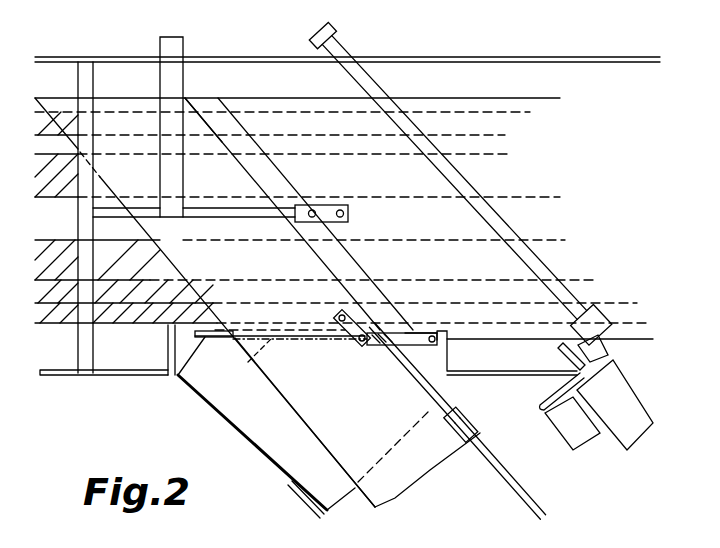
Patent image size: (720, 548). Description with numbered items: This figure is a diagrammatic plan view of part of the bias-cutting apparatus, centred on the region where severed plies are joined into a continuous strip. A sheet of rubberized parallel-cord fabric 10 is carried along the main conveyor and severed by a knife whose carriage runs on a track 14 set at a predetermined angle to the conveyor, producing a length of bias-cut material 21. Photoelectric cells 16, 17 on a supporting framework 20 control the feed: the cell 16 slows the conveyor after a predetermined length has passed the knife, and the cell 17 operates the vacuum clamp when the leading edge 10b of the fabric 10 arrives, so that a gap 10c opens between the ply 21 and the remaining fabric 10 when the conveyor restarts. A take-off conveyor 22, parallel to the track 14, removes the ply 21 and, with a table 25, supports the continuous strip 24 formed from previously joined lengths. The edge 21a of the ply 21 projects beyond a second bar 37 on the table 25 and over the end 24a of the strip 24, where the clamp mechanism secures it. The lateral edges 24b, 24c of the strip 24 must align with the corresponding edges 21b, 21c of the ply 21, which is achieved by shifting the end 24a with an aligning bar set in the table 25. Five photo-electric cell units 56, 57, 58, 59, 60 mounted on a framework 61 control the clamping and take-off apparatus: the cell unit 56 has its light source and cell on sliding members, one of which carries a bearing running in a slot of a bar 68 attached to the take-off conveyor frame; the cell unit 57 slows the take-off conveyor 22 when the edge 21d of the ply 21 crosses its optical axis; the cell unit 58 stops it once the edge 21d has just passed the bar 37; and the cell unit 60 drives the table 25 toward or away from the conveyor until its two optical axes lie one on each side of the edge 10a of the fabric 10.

The sheet of rubberized parallel-cord fabric 10 is at (288, 143).
The edge of the fabric 10a is at (480, 337).
The leading edge of the fabric 10b is at (287, 180).
The gap 10c is at (222, 135).
The track 14 is at (478, 177).
The photoelectric cell 16 is at (350, 210).
The photoelectric cell 17 is at (290, 240).
The supporting framework 20 is at (167, 94).
The length of bias-cut material 21 is at (203, 267).
The edge of the ply 21a is at (283, 336).
The lateral edge of the ply 21b is at (182, 245).
The lateral edge of the ply 21c is at (340, 313).
The edge of the ply 21d is at (127, 98).
The take-off conveyor 22 is at (497, 457).
The continuous strip 24 is at (317, 430).
The end of the strip 24a is at (209, 359).
The lateral edge of the strip 24b is at (328, 453).
The lateral edge of the strip 24c is at (440, 377).
The table 25 is at (227, 414).
The second bar 37 is at (175, 378).
The photo-electric cell unit 56 is at (382, 320).
The photo-electric cell unit 57 is at (342, 320).
The photo-electric cell unit 58 is at (360, 341).
The photo-electric cell unit 59 is at (384, 346).
The photo-electric cell unit 60 is at (434, 337).
The framework 61 is at (417, 330).
The bar 68 is at (432, 402).